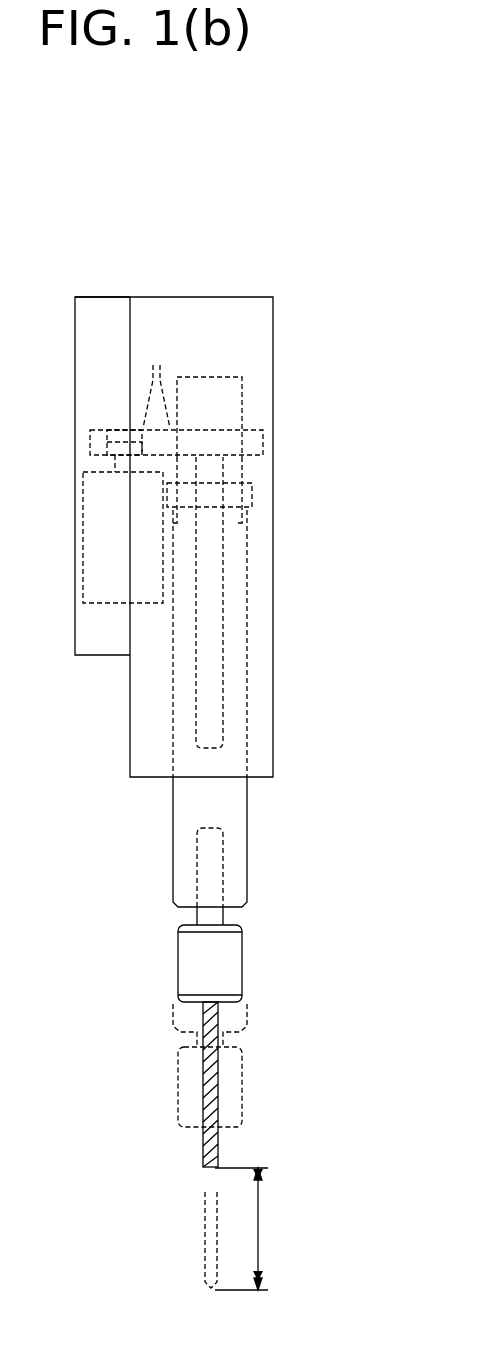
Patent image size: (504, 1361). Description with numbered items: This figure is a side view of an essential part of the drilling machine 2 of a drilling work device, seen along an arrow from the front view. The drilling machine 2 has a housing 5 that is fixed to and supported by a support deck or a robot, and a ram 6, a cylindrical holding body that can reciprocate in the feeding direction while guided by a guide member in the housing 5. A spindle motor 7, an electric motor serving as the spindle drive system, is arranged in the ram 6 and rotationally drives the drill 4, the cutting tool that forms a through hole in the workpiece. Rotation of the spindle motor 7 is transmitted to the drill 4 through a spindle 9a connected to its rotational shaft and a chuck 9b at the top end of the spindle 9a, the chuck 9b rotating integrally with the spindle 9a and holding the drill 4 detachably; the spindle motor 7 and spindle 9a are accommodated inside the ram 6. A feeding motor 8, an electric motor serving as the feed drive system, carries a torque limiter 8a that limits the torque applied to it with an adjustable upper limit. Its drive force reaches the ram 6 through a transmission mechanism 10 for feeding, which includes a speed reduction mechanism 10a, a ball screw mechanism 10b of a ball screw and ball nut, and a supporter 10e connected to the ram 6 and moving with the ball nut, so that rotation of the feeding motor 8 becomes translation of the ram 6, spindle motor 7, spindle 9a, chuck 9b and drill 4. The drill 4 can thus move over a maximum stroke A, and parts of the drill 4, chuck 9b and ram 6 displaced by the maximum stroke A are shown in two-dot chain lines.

The drilling machine 2 is at (262, 267).
The drill 4 is at (207, 1143).
The housing 5 is at (73, 612).
The ram 6 is at (247, 707).
The spindle motor 7 is at (242, 395).
The feeding motor 8 is at (83, 512).
The torque limiter 8a is at (113, 433).
The spindle 9a is at (223, 857).
The chuck 9b is at (227, 967).
The transmission mechanism for feeding 10 is at (253, 473).
The speed reduction mechanism 10a is at (162, 381).
The ball screw mechanism 10b is at (222, 635).
The supporter 10e is at (252, 497).
The maximum stroke A is at (246, 1229).